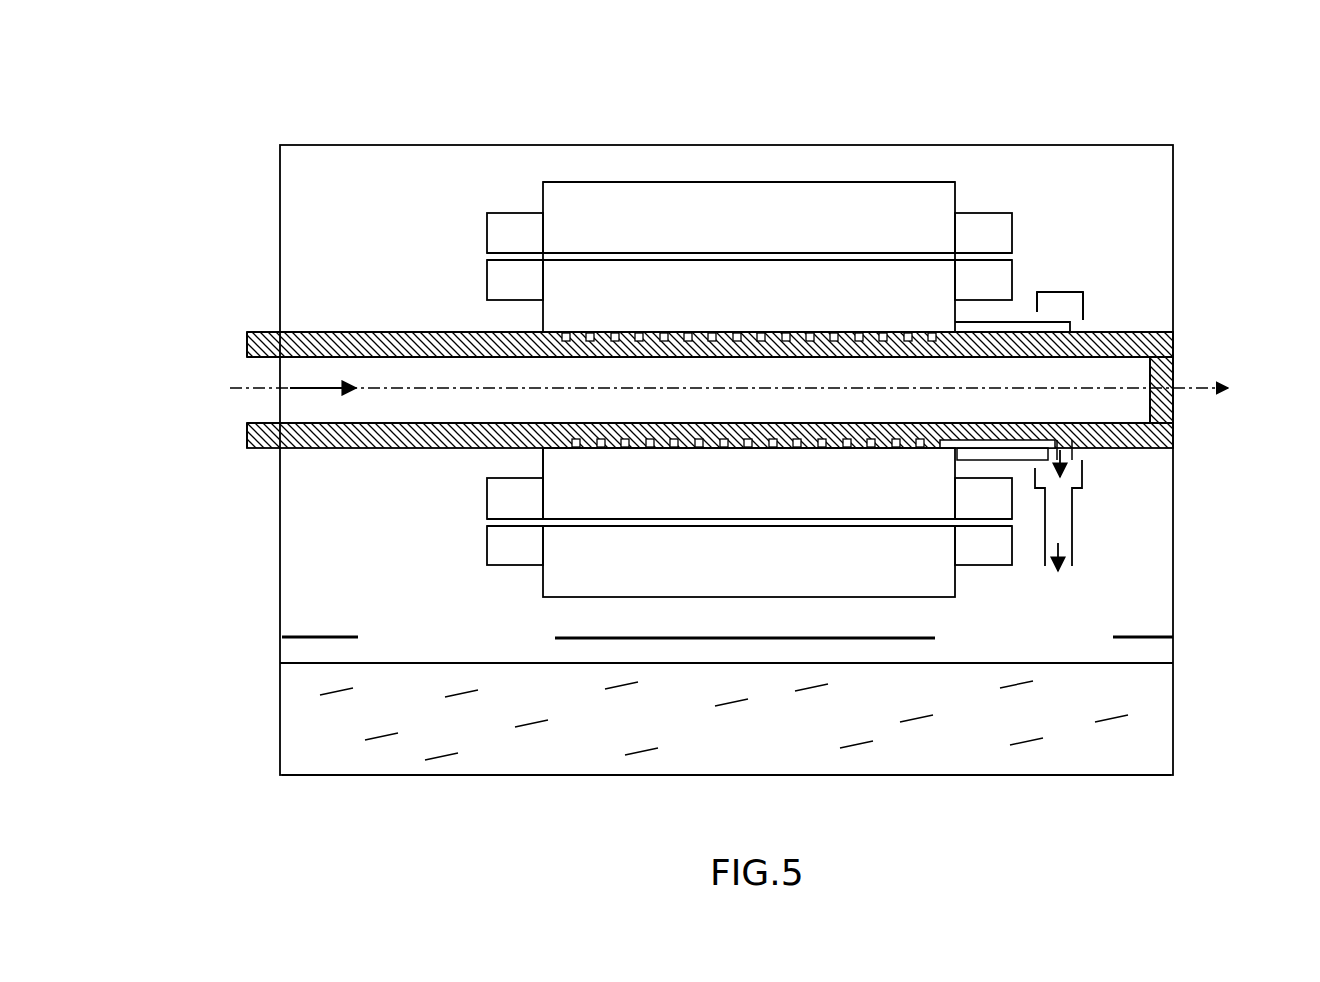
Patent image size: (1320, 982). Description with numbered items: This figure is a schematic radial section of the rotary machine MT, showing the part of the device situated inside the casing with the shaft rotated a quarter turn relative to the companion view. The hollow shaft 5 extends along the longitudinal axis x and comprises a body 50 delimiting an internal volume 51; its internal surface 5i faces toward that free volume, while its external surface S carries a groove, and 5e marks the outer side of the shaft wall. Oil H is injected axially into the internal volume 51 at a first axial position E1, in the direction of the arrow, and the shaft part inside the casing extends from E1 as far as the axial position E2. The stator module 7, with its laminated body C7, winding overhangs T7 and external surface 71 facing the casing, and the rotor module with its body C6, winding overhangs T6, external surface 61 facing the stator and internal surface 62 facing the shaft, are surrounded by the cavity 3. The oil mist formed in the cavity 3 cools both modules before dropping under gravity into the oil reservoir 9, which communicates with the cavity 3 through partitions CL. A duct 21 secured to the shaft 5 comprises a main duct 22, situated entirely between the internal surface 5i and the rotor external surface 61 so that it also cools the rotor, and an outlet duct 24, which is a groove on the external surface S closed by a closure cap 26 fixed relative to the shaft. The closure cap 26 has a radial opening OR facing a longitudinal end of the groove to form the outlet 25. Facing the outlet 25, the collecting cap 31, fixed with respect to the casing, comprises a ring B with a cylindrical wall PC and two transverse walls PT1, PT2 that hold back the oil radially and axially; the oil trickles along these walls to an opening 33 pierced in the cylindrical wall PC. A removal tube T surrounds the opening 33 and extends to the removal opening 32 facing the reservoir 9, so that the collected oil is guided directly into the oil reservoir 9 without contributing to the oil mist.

The rotary machine MT is at (349, 108).
The cavity 3 is at (302, 207).
The oil reservoir 9 is at (280, 715).
The oil H is at (545, 770).
The partitions CL is at (330, 637).
The shaft 5 is at (264, 327).
The body 50 is at (322, 330).
The outer surface of pipe 5e is at (440, 326).
The internal surface 5i is at (416, 360).
The internal volume 51 is at (263, 407).
The axial position E1 is at (247, 388).
The axial position E2 is at (1153, 388).
The main duct 22 is at (570, 345).
The internal surface 62 is at (839, 456).
The outlet duct 24 is at (967, 444).
The radial opening OR is at (1062, 428).
The outlet 25 is at (1062, 458).
The longitudinal axis x is at (744, 388).
The stator module 7 is at (564, 188).
The body C7 is at (605, 180).
The body C6 is at (732, 258).
The external surface 71 is at (865, 176).
The winding overhangs T7 is at (508, 222).
The winding overhangs T6 is at (505, 278).
The duct 21 is at (660, 326).
The closure cap 26 is at (972, 328).
The collecting cap 31 is at (1068, 268).
The transverse wall PT1 is at (1037, 300).
The cylindrical wall PC is at (1075, 290).
The ring B is at (1090, 289).
The transverse wall PT2 is at (1083, 303).
The external surface 61 is at (778, 531).
The external surface S is at (558, 458).
The opening 33 is at (1073, 497).
The removal opening 32 is at (1073, 565).
The removal tube T is at (1043, 536).